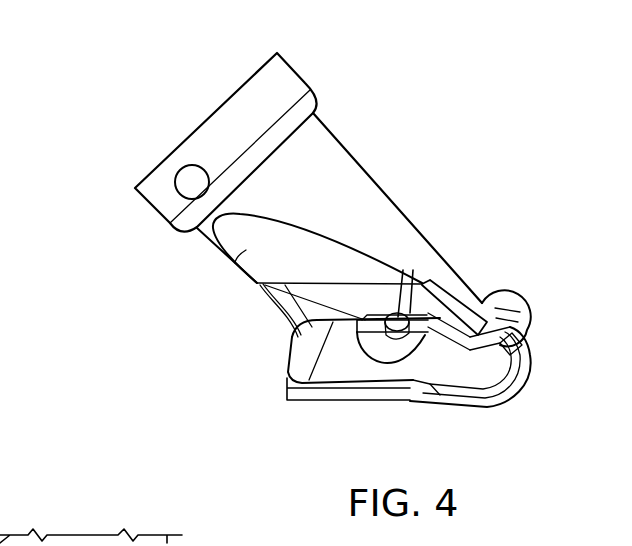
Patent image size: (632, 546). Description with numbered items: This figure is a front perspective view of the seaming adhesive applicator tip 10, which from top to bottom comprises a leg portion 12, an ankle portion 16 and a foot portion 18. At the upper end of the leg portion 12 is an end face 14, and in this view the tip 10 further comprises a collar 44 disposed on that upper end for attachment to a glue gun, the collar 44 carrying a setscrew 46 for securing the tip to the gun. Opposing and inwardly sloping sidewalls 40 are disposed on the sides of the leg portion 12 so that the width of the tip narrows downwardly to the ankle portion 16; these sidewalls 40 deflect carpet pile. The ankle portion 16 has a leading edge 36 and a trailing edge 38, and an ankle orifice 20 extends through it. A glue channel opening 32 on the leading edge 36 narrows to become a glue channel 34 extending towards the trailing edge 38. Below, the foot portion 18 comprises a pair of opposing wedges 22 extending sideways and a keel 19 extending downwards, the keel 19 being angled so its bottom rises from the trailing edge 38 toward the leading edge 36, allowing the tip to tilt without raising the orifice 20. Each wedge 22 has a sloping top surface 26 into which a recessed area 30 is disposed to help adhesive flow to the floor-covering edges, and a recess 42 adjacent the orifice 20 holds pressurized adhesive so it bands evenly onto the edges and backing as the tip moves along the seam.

The seaming adhesive applicator tip 10 is at (407, 109).
The leg portion 12 is at (387, 193).
The end face 14 is at (263, 65).
The ankle portion 16 is at (508, 288).
The foot portion 18 is at (522, 413).
The keel 19 is at (447, 403).
The ankle orifice 20 is at (407, 277).
The wedges 22 is at (300, 353).
The sloping top surface 26 is at (430, 373).
The recessed area 30 is at (482, 403).
The glue channel opening 32 is at (302, 312).
The glue channel 34 is at (512, 315).
The leading edge 36 is at (208, 347).
The trailing edge 38 is at (548, 345).
The inwardly sloping sidewalls 40 is at (238, 263).
The recess 42 is at (383, 353).
The collar 44 is at (295, 67).
The setscrew 46 is at (180, 167).